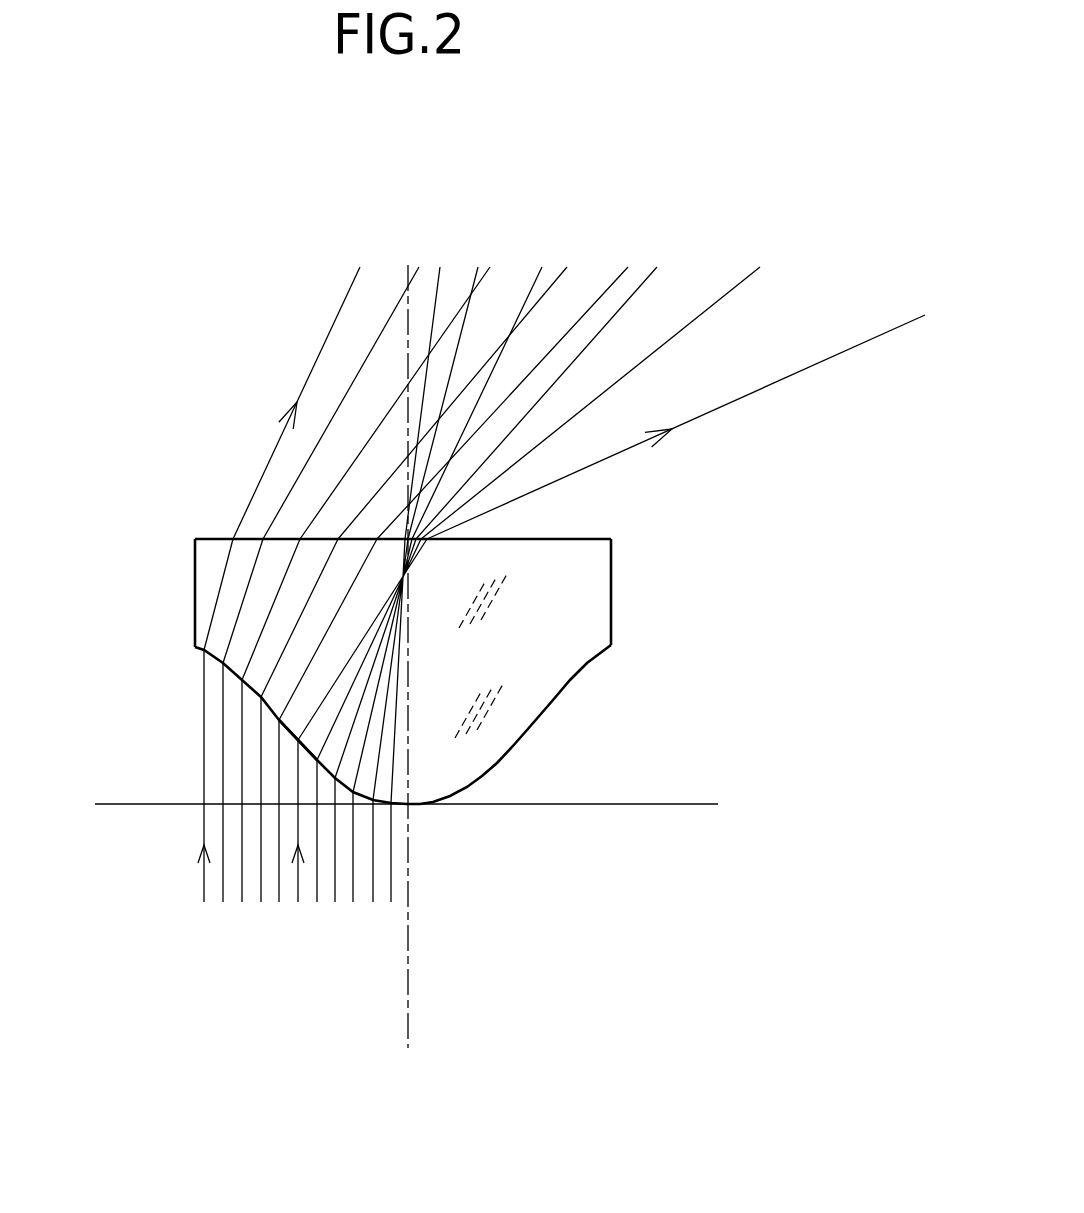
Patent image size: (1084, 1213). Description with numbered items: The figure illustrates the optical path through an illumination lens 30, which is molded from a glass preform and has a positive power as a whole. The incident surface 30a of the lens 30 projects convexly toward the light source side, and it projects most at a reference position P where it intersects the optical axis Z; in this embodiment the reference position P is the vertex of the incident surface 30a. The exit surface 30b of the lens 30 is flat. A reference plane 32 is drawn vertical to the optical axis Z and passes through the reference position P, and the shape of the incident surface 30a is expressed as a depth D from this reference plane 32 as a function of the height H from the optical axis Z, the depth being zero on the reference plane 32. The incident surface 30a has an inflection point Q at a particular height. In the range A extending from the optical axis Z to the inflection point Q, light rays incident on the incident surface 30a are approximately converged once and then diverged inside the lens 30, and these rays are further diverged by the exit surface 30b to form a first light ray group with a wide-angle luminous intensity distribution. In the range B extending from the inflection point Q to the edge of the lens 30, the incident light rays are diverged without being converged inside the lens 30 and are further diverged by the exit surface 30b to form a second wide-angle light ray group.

The lens 30 is at (586, 611).
The incident surface 30a is at (552, 700).
The exit surface 30b is at (577, 540).
The reference plane 32 is at (602, 804).
The reference position P is at (407, 804).
The inflection point Q is at (297, 743).
The optical axis Z is at (408, 987).
The range from the optical axis to the inflection point A is at (298, 910).
The range from the inflection point to the lens edge B is at (201, 909).